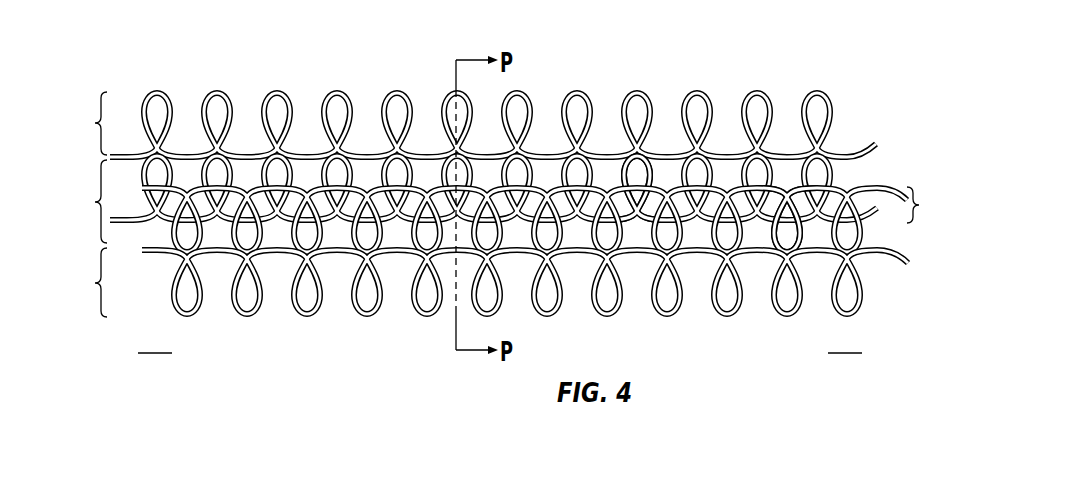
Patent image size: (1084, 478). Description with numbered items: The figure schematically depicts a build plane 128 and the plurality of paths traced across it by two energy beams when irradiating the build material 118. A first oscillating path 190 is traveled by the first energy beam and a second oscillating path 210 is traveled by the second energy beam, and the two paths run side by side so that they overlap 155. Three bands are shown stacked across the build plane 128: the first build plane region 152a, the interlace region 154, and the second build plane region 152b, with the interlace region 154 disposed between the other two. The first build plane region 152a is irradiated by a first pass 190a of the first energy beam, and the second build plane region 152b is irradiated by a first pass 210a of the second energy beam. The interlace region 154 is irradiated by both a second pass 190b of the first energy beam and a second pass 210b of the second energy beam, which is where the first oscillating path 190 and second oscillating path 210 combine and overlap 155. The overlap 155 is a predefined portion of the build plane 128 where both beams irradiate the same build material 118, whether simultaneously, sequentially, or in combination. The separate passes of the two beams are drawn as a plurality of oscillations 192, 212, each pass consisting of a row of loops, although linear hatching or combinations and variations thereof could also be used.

The build material 118 is at (845, 340).
The build plane 128 is at (155, 340).
The first build plane region 152a is at (74, 123).
The second build plane region 152b is at (74, 282).
The interlace region 154 is at (77, 201).
The overlap 155 is at (934, 205).
The first oscillating path 190 is at (914, 113).
The first pass of the first energy beam 190a is at (828, 97).
The second pass of the first energy beam 190b is at (530, 136).
The oscillations 192 is at (619, 183).
The second oscillating path 210 is at (812, 308).
The first pass of the second energy beam 210a is at (862, 288).
The second pass of the second energy beam 210b is at (551, 271).
The oscillations 212 is at (774, 239).